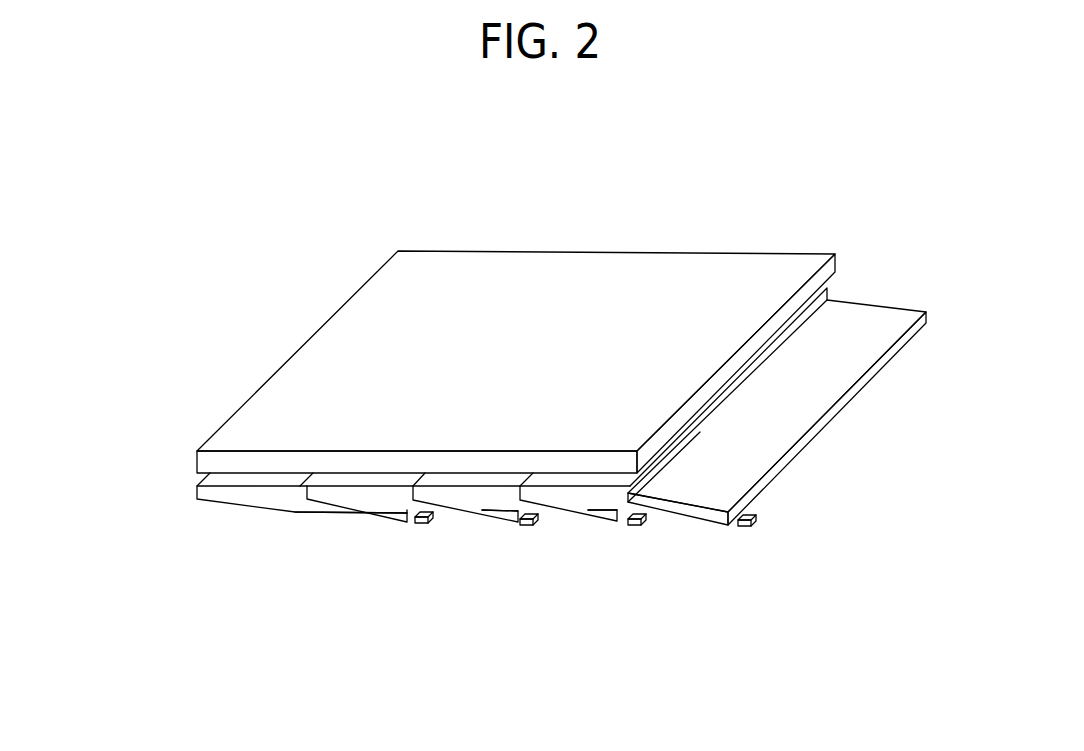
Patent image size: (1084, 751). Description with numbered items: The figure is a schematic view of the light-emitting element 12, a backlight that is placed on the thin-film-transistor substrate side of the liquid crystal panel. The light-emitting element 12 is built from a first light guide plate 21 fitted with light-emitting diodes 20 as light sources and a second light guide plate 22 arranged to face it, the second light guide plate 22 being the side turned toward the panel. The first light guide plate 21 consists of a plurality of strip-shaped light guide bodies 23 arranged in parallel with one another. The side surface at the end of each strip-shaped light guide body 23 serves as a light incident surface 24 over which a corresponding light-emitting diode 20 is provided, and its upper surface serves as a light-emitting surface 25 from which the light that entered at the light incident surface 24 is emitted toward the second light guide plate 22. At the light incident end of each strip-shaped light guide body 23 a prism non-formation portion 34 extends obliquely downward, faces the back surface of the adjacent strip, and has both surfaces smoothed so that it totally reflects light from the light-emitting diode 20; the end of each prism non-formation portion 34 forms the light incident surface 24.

The light-emitting element 12 is at (609, 190).
The first light guide plate 21 is at (186, 490).
The second light guide plate 22 is at (302, 364).
The strip-shaped light guide body 23 is at (228, 497).
The light incident surface 24 is at (789, 455).
The light-emitting surface 25 is at (300, 479).
The light-emitting diode 20 is at (420, 526).
The prism non-formation portion 34 is at (373, 527).